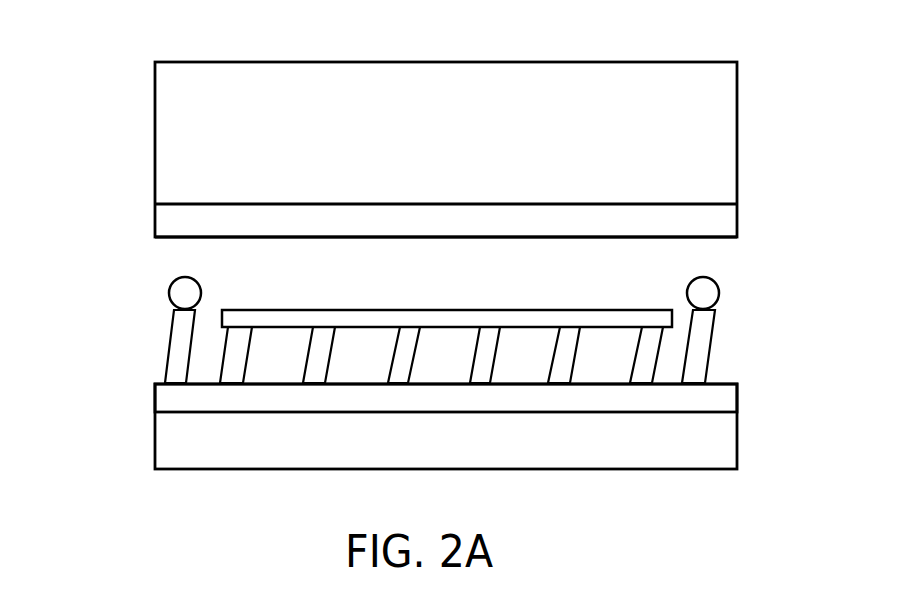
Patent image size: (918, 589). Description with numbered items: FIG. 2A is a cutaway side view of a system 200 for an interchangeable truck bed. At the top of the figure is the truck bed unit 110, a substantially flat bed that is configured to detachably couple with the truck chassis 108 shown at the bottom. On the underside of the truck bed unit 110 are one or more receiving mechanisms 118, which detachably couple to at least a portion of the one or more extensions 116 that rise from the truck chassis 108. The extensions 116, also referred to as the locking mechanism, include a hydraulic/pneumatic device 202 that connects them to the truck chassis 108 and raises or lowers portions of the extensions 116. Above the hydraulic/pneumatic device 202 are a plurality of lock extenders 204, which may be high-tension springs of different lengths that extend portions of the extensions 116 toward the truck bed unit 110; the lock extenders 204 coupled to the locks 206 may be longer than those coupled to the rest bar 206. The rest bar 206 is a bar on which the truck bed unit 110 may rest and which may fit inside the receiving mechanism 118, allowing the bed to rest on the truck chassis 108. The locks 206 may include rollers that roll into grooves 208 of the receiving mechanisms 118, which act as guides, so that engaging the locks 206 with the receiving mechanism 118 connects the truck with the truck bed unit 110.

The system for an interchangeable truck bed 200 is at (98, 51).
The truck bed unit 110 is at (683, 72).
The receiving mechanism 118 is at (155, 222).
The groove 208 is at (200, 291).
The rest bar / lock 206 is at (468, 310).
The lock extender 204 is at (228, 338).
The hydraulic/pneumatic device 202 is at (155, 398).
The truck chassis 108 is at (662, 462).
The extensions 116 is at (780, 275).